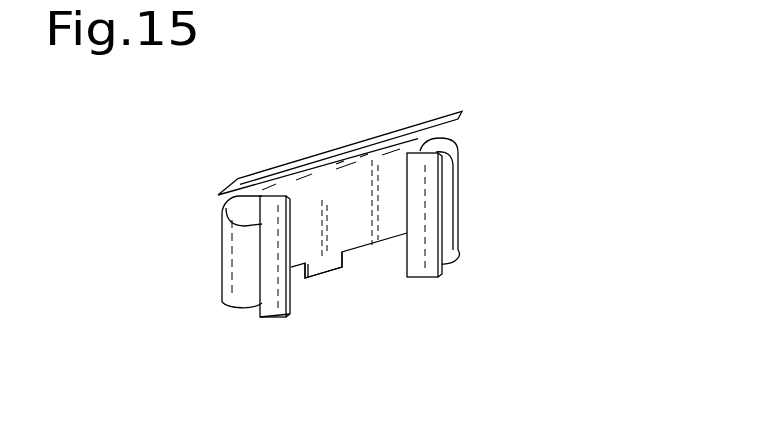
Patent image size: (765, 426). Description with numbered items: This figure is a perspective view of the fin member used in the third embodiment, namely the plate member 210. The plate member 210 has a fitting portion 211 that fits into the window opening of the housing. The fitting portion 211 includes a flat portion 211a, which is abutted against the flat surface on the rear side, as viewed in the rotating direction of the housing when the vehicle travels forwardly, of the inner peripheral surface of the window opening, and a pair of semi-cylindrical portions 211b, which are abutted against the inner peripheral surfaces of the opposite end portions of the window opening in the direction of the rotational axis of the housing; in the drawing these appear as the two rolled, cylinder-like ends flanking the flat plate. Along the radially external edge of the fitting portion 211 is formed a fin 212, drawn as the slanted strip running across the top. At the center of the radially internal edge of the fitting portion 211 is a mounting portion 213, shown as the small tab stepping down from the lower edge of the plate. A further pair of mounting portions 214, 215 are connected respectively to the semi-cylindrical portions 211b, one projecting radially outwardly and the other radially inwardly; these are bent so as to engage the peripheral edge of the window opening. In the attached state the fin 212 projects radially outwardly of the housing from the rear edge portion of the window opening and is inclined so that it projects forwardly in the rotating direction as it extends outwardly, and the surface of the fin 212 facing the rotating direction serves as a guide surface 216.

The plate member 210 is at (470, 195).
The fitting portion 211 is at (380, 259).
The flat portion 211a is at (352, 222).
The semi-cylindrical portions 211b is at (222, 228).
The fin 212 is at (314, 155).
The mounting portion 213 is at (328, 274).
The mounting portion 214 is at (268, 197).
The mounting portion 215 is at (276, 318).
The guide surface 216 is at (375, 160).